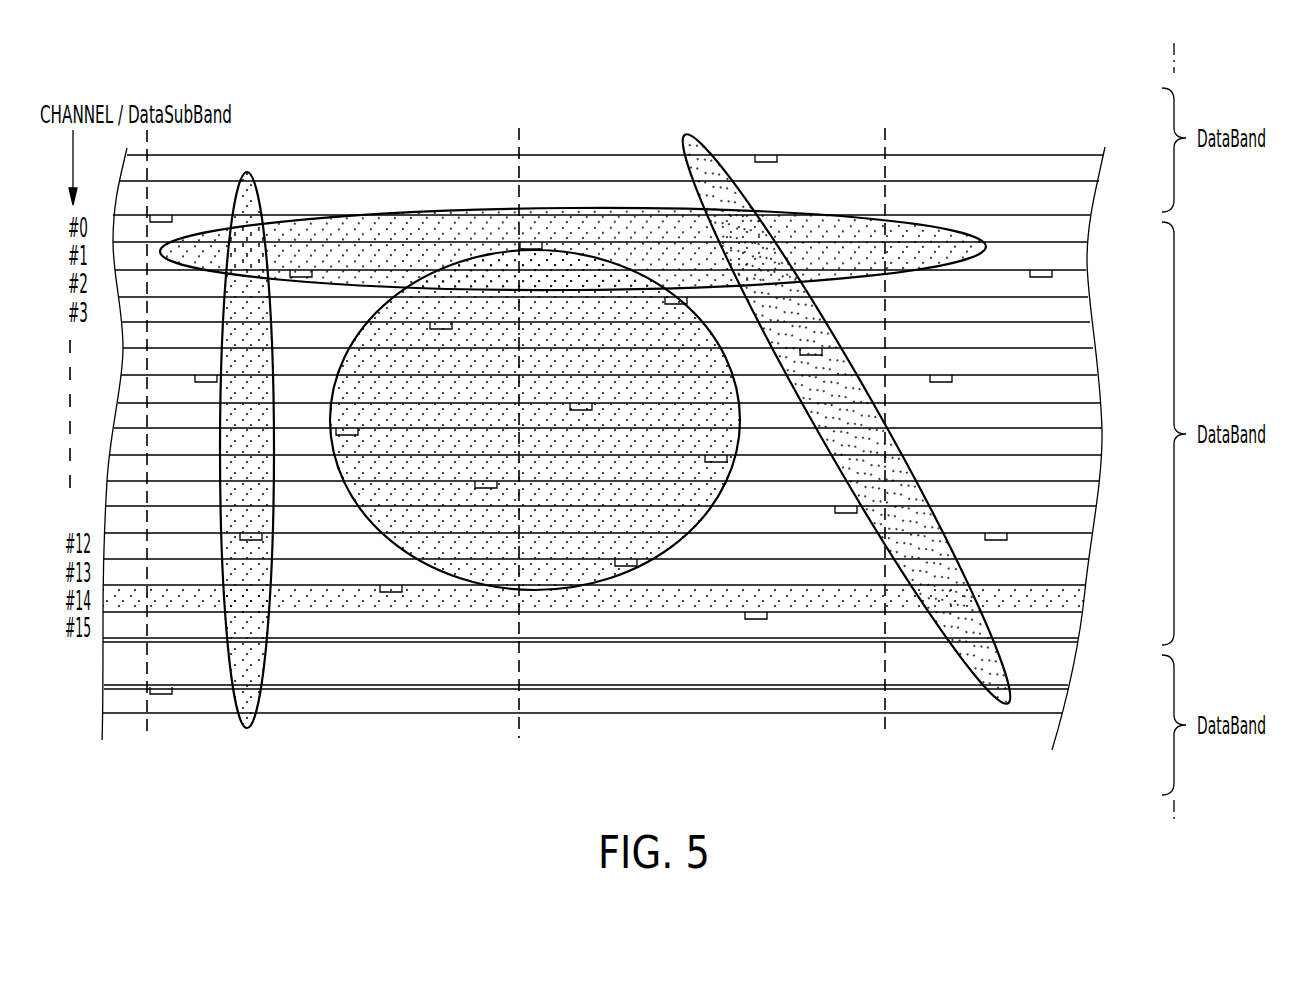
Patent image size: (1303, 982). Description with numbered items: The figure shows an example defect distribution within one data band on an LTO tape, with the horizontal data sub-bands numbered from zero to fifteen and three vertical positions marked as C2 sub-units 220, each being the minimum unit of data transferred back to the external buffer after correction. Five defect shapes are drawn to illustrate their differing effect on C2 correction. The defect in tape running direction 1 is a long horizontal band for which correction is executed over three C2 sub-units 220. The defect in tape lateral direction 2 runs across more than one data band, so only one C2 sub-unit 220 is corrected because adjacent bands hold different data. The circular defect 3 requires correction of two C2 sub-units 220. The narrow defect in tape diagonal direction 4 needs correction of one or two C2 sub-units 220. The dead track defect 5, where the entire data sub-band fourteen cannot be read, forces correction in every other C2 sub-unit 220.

The defect in tape running direction 1 is at (936, 237).
The defect in tape lateral direction 2 is at (244, 733).
The circular defect 3 is at (736, 446).
The narrow defect in tape diagonal direction 4 is at (1007, 708).
The dead track defect 5 is at (1086, 597).
The C2 sub-unit 220 is at (927, 130).